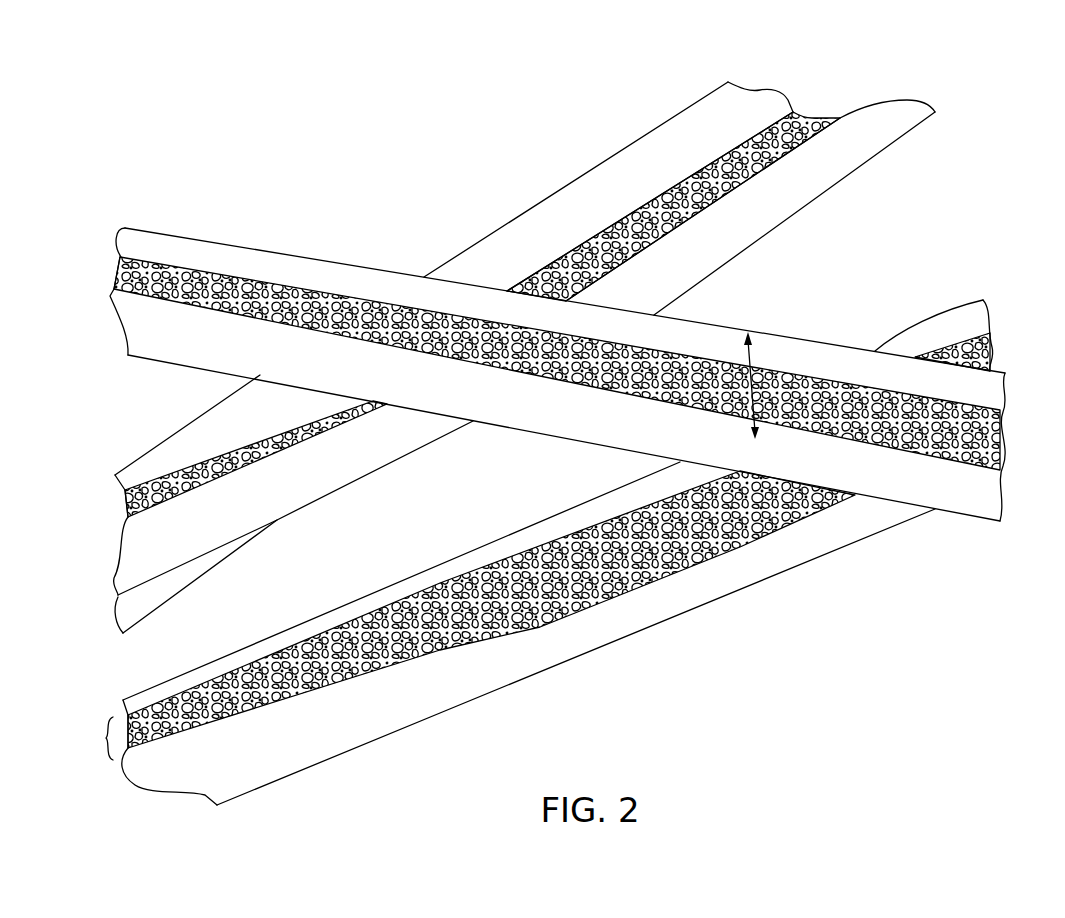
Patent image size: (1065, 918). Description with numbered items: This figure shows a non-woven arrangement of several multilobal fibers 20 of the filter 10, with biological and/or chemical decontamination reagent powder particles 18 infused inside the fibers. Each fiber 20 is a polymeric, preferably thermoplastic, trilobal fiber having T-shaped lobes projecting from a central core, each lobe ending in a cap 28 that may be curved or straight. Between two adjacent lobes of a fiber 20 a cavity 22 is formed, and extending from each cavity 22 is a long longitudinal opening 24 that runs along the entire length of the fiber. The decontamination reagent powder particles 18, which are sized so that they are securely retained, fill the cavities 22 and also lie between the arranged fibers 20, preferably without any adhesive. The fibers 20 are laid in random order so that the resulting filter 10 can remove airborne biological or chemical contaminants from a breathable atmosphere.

The filter 10 is at (961, 285).
The biological and/or chemical decontamination reagent powder particles 18 is at (762, 130).
The trilobal fiber 20 is at (822, 162).
The cavity 22 is at (120, 258).
The longitudinal opening 24 is at (745, 350).
The cap 28 is at (340, 263).